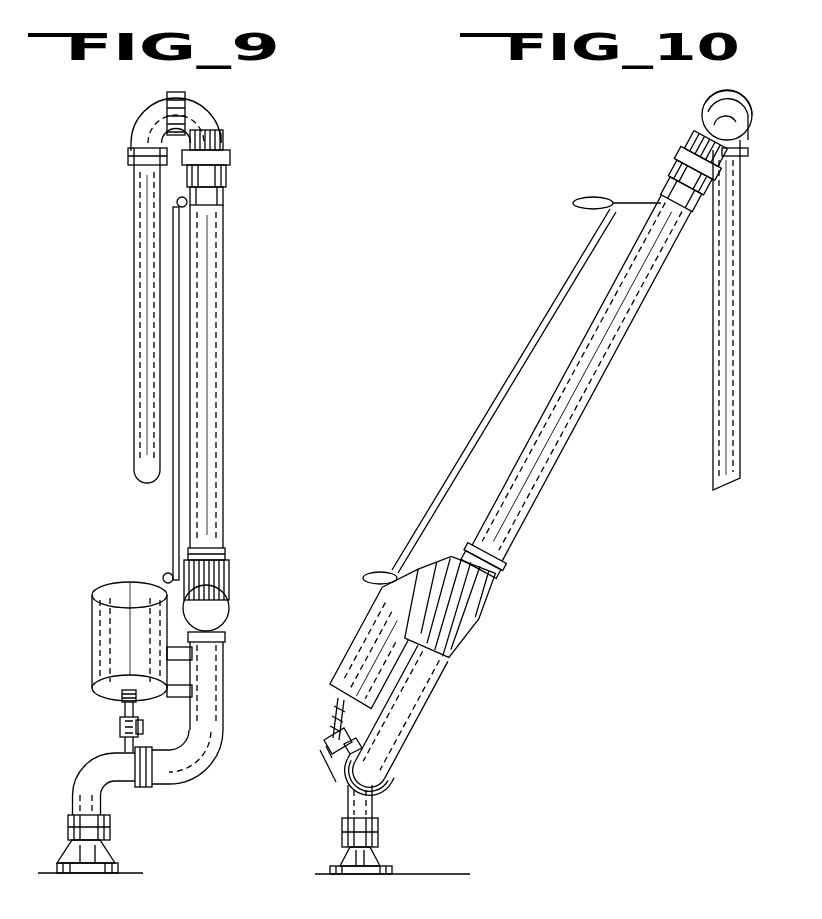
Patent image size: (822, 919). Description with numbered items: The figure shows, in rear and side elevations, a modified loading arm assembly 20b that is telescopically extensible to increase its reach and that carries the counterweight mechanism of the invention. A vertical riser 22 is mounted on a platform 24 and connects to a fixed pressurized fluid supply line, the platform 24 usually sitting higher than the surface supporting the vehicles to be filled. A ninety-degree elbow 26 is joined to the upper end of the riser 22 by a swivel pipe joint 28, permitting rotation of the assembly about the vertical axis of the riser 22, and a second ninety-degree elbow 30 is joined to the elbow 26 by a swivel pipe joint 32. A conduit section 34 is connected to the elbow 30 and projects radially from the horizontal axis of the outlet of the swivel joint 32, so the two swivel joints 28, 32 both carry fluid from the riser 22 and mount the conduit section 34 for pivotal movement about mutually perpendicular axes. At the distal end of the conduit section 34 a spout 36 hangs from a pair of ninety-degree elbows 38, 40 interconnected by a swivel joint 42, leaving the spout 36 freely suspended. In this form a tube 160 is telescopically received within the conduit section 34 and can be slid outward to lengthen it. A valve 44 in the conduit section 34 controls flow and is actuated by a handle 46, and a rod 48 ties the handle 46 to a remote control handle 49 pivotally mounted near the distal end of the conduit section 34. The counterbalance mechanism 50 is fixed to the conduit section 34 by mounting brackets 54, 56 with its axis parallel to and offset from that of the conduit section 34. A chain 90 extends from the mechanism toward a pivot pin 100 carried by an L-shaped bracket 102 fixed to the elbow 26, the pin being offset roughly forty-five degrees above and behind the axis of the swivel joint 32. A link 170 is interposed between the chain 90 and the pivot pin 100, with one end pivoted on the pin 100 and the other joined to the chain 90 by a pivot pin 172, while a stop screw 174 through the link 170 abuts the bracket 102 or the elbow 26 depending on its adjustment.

In FIG. 9, the loading arm assembly 20b is at (126, 433).
In FIG. 10, the loading arm assembly 20b is at (554, 503).
In FIG. 9, the riser 22 is at (95, 857).
In FIG. 10, the riser 22 is at (352, 857).
In FIG. 9, the platform 24 is at (44, 872).
In FIG. 10, the platform 24 is at (432, 872).
In FIG. 9, the elbow 26 is at (86, 774).
In FIG. 10, the elbow 26 is at (358, 801).
In FIG. 9, the swivel pipe joint 28 is at (95, 831).
In FIG. 10, the swivel pipe joint 28 is at (368, 828).
In FIG. 9, the second elbow 30 is at (196, 781).
In FIG. 10, the second elbow 30 is at (350, 782).
In FIG. 9, the swivel pipe joint 32 is at (142, 788).
In FIG. 10, the swivel pipe joint 32 is at (378, 780).
In FIG. 9, the conduit section 34 is at (200, 348).
In FIG. 10, the conduit section 34 is at (563, 412).
In FIG. 9, the spout 36 is at (145, 279).
In FIG. 10, the spout 36 is at (722, 434).
In FIG. 9, the elbow 38 is at (205, 110).
In FIG. 10, the elbow 38 is at (721, 119).
In FIG. 9, the elbow 40 is at (148, 118).
In FIG. 10, the elbow 40 is at (746, 146).
In FIG. 9, the swivel joint 42 is at (180, 93).
In FIG. 10, the swivel joint 42 is at (714, 98).
In FIG. 9, the valve 44 is at (212, 603).
In FIG. 10, the valve 44 is at (440, 612).
In FIG. 9, the handle 46 is at (166, 573).
In FIG. 10, the handle 46 is at (383, 572).
In FIG. 9, the rod 48 is at (173, 528).
In FIG. 10, the rod 48 is at (553, 308).
In FIG. 9, the remote control handle 49 is at (177, 202).
In FIG. 10, the remote control handle 49 is at (597, 200).
In FIG. 9, the counterbalance mechanism 50 is at (97, 628).
In FIG. 10, the counterbalance mechanism 50 is at (357, 635).
In FIG. 9, the mounting bracket 54 is at (192, 656).
In FIG. 9, the mounting bracket 56 is at (192, 697).
In FIG. 9, the chain 90 is at (121, 697).
In FIG. 10, the chain 90 is at (340, 700).
In FIG. 10, the pivot pin 100 is at (324, 754).
In FIG. 9, the L-shaped bracket 102 is at (125, 749).
In FIG. 10, the L-shaped bracket 102 is at (334, 772).
In FIG. 9, the tube 160 is at (206, 184).
In FIG. 10, the tube 160 is at (675, 185).
In FIG. 9, the link 170 is at (120, 728).
In FIG. 10, the link 170 is at (324, 738).
In FIG. 10, the pivot pin 172 is at (338, 720).
In FIG. 9, the stop screw 174 is at (143, 725).
In FIG. 10, the stop screw 174 is at (362, 748).